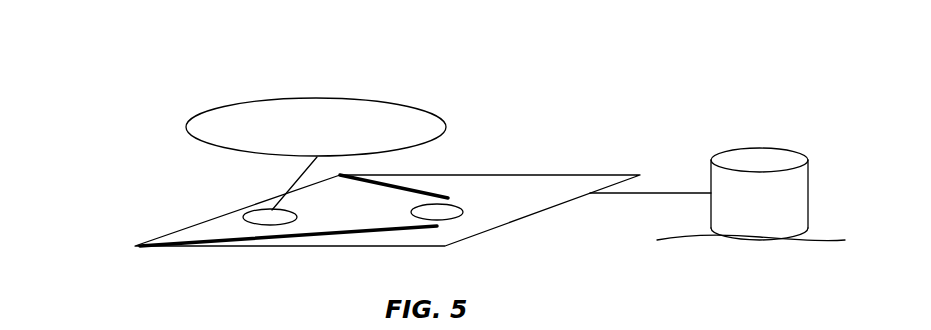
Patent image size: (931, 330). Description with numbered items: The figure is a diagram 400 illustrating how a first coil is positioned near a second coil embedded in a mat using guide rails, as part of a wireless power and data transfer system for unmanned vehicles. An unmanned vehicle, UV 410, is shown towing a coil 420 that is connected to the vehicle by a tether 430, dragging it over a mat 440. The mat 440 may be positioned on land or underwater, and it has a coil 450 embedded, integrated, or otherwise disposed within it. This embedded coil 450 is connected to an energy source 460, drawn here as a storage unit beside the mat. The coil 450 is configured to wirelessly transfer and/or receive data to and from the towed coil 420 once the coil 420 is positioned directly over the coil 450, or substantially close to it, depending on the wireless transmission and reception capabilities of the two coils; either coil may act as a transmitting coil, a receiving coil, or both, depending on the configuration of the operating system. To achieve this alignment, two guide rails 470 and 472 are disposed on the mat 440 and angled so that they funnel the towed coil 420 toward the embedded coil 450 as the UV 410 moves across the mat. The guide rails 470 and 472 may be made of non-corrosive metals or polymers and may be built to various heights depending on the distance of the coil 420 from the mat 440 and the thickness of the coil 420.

The diagram 400 is at (93, 93).
The UV 410 is at (447, 127).
The coil 420 is at (242, 218).
The tether 430 is at (287, 183).
The mat 440 is at (572, 185).
The coil 450 is at (463, 212).
The energy source 460 is at (760, 157).
The guide rail 470 is at (434, 194).
The guide rail 472 is at (296, 240).